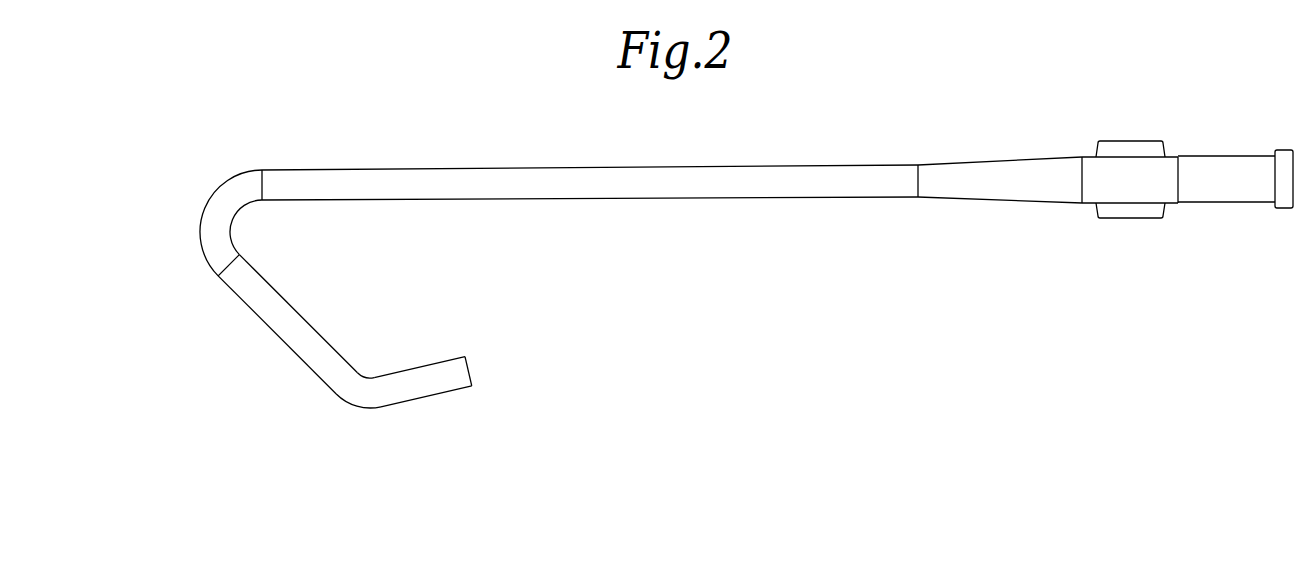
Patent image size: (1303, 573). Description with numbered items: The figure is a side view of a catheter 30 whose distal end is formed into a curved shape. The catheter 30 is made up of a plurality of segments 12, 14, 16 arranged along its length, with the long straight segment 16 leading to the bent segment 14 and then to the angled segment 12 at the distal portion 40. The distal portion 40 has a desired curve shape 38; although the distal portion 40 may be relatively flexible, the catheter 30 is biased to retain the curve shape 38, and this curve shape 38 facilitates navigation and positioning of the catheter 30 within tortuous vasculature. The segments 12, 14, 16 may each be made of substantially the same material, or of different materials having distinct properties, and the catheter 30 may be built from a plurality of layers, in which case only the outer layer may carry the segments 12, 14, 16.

The catheter 30 is at (528, 120).
The segment 16 is at (823, 167).
The segment 14 is at (222, 187).
The curve shape 38 is at (176, 213).
The segment 12 is at (332, 388).
The distal portion 40 is at (386, 452).